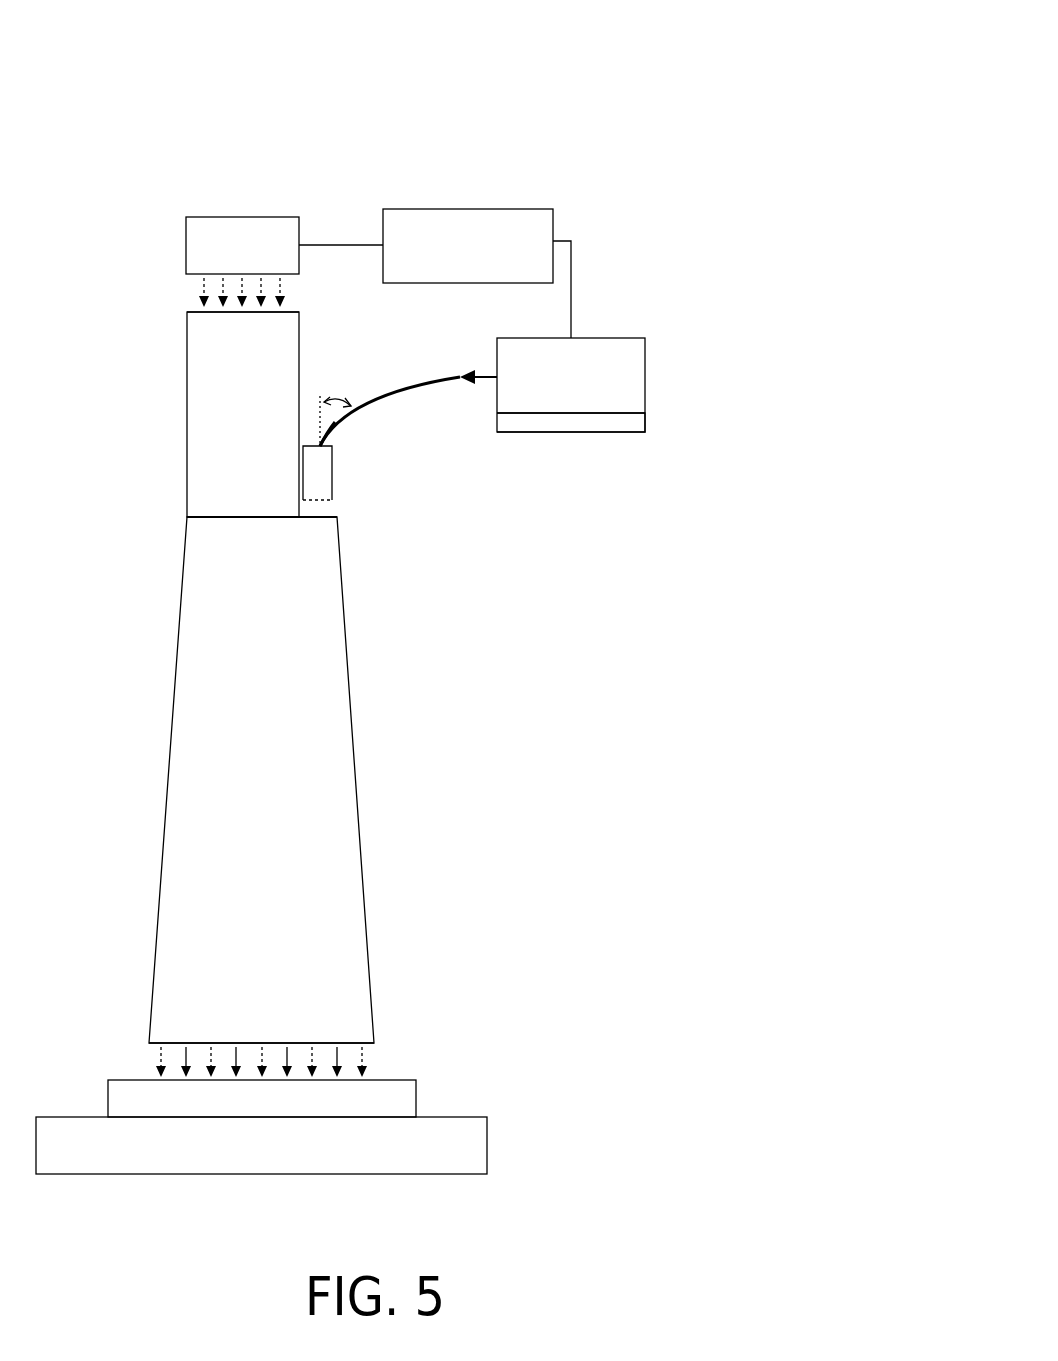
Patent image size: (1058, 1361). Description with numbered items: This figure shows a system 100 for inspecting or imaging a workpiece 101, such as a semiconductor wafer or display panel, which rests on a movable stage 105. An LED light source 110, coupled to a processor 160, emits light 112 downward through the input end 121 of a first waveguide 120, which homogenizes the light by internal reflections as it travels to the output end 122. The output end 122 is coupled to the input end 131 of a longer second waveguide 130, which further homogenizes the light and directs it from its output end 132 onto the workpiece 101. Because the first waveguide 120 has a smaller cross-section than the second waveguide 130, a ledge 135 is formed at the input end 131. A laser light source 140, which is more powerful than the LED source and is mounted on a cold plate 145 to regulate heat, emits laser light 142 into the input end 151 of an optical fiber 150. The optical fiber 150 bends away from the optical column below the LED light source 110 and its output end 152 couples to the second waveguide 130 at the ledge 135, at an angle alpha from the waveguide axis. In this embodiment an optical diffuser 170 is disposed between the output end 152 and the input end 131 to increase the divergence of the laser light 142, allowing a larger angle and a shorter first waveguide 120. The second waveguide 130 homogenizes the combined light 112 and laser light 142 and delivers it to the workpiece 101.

The system 100 is at (842, 63).
The workpiece 101 is at (416, 1099).
The stage 105 is at (487, 1145).
The LED light source 110 is at (259, 257).
The light 112 is at (195, 292).
The first waveguide 120 is at (260, 424).
The input end of the first waveguide 121 is at (176, 330).
The output end of the first waveguide 122 is at (176, 498).
The second waveguide 130 is at (279, 792).
The input end of the second waveguide 131 is at (176, 535).
The output end of the second waveguide 132 is at (138, 1024).
The ledge 135 is at (331, 517).
The laser light source 140 is at (588, 387).
The laser light 142 is at (468, 395).
The cold plate 145 is at (645, 424).
The optical fiber 150 is at (396, 393).
The input end of the optical fiber 151 is at (478, 357).
The output end of the optical fiber 152 is at (336, 441).
The processor 160 is at (485, 257).
The optical diffuser 170 is at (333, 472).